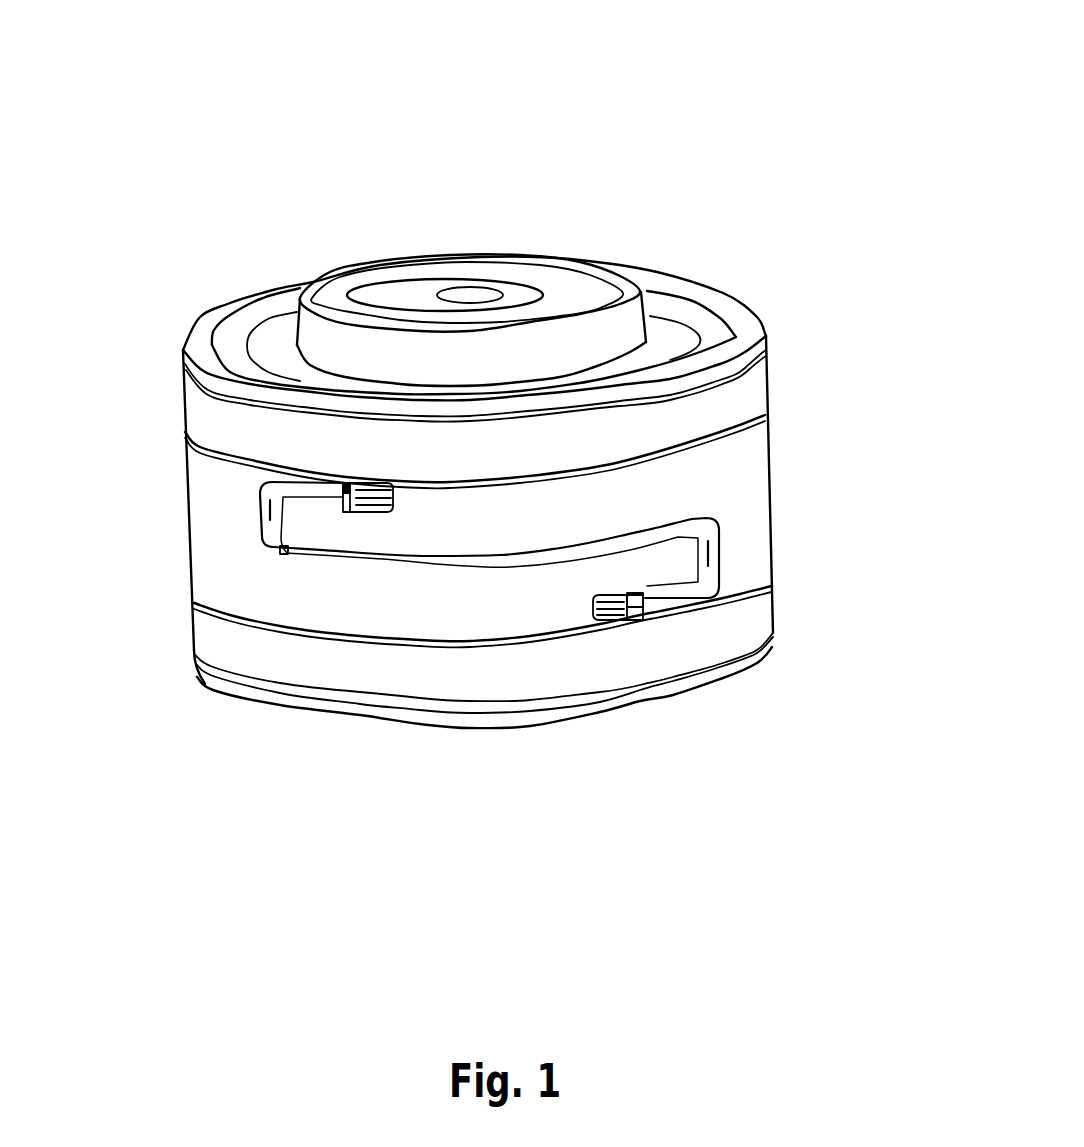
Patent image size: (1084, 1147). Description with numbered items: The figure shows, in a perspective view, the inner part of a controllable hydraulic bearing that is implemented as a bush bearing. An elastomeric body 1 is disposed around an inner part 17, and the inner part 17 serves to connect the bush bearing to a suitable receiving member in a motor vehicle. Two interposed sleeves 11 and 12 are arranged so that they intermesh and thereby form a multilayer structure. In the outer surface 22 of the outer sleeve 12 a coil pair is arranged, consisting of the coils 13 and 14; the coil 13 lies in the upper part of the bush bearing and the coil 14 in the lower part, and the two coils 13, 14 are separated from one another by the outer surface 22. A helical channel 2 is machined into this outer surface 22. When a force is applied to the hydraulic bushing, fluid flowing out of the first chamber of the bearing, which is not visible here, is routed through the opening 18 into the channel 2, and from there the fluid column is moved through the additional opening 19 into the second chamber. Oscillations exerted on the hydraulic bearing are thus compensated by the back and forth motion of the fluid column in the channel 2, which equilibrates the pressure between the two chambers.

The elastomeric body 1 is at (497, 460).
The helical channel 2 is at (510, 548).
The interposed sleeve 11 is at (241, 325).
The outer sleeve 12 is at (186, 347).
The coil 13 is at (721, 398).
The coil 14 is at (744, 617).
The inner part 17 is at (455, 290).
The opening 18 is at (341, 511).
The additional opening 19 is at (600, 612).
The outer surface 22 is at (726, 478).